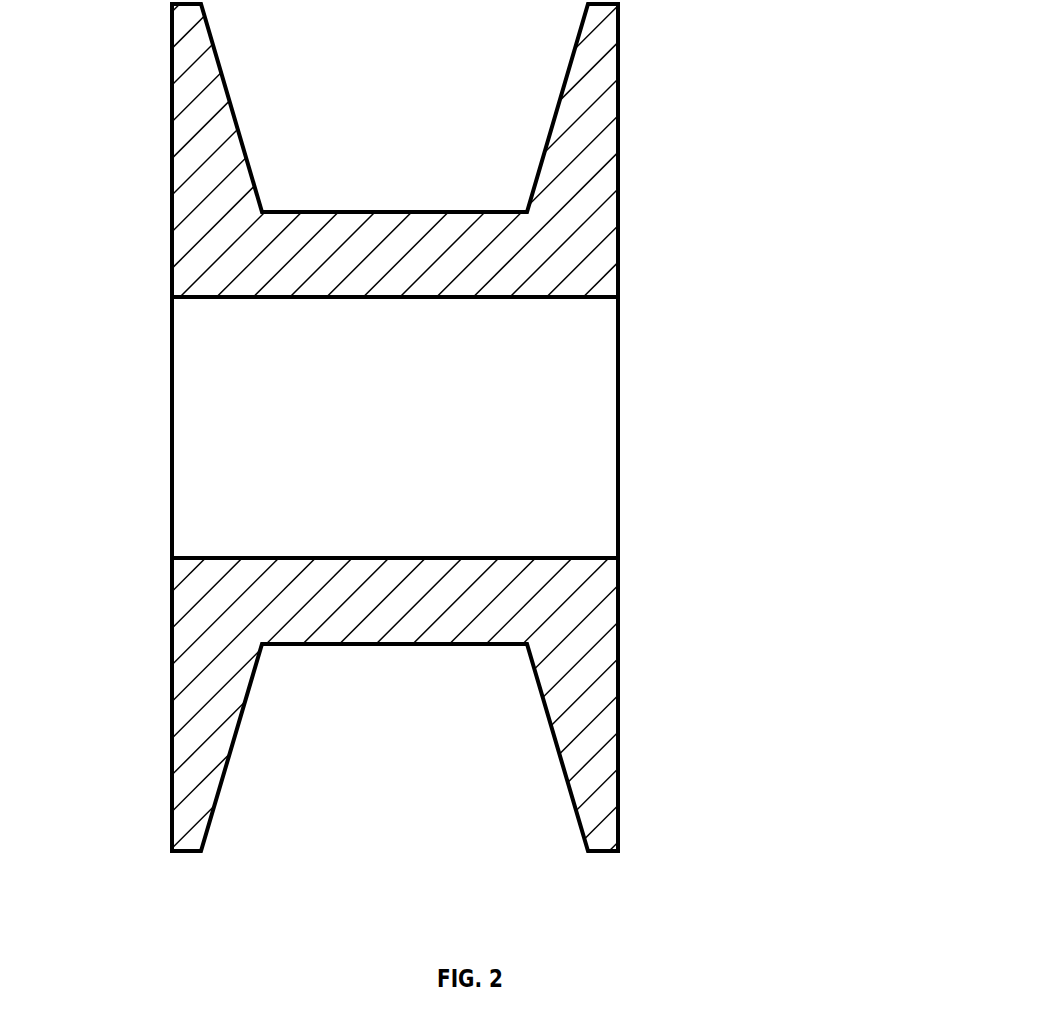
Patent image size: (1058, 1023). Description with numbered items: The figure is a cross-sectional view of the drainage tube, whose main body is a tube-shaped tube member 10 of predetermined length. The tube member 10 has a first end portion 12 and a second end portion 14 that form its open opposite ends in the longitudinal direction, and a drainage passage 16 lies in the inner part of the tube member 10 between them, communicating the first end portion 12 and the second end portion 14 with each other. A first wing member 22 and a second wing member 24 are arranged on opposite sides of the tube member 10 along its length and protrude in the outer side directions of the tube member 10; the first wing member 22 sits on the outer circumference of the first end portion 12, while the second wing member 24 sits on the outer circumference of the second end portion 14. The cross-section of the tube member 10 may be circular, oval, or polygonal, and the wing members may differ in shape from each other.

The tube member 10 is at (529, 511).
The first end portion 12 is at (180, 448).
The second end portion 14 is at (605, 460).
The drainage passage 16 is at (395, 397).
The first wing member 22 is at (193, 75).
The second wing member 24 is at (608, 718).